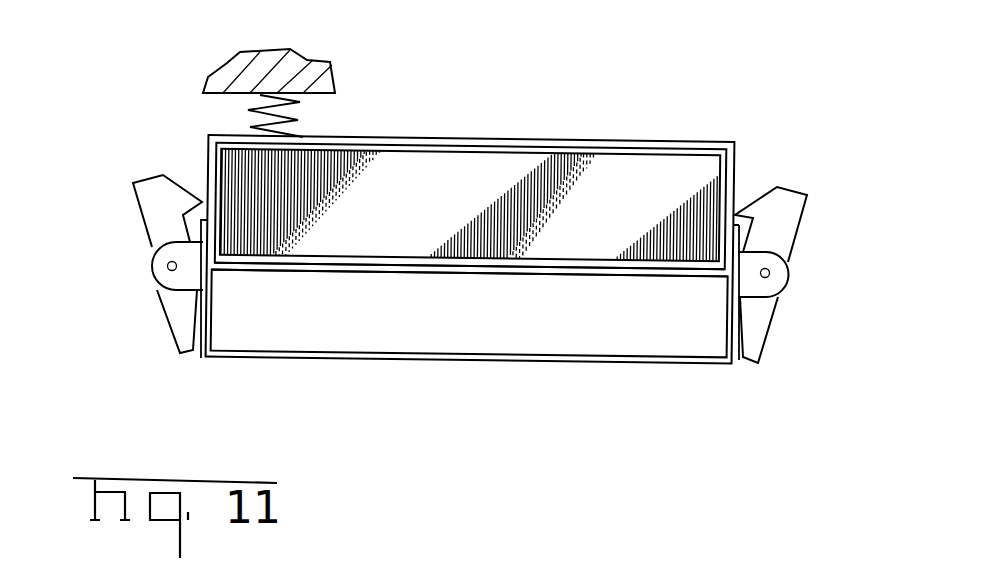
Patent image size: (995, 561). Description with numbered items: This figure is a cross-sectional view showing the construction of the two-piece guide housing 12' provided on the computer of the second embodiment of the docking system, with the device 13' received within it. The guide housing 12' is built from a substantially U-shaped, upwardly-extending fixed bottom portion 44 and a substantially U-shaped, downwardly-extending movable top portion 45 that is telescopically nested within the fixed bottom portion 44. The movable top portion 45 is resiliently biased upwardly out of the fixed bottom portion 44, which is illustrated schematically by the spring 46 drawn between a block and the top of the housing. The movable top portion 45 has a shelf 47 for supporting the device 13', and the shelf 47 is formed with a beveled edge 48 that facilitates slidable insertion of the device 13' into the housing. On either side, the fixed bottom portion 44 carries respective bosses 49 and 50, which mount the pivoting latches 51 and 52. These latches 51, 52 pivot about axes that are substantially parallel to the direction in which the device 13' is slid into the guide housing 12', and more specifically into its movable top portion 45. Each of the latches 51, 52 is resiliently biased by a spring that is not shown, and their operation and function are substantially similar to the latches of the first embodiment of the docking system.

The guide housing 12' is at (459, 236).
The device 13' is at (471, 147).
The fixed bottom portion 44 is at (327, 357).
The movable top portion 45 is at (428, 137).
The spring 46 is at (303, 117).
The shelf 47 is at (493, 272).
The beveled edge 48 is at (535, 268).
The boss 49 is at (152, 281).
The boss 50 is at (775, 273).
The latch 51 is at (150, 220).
The latch 52 is at (773, 208).